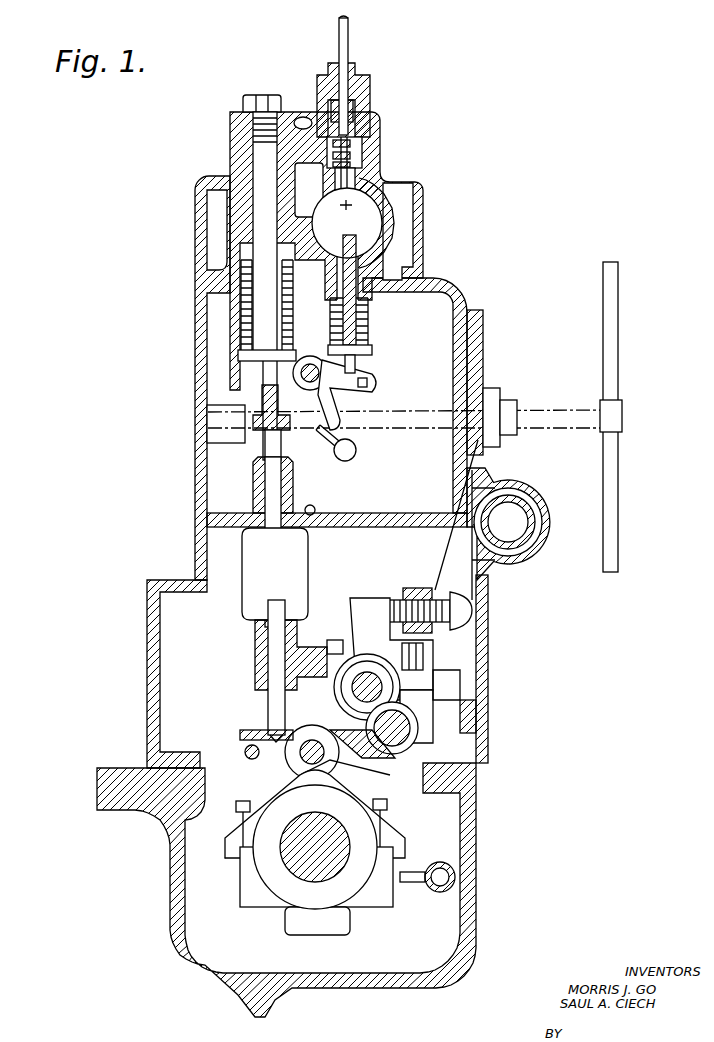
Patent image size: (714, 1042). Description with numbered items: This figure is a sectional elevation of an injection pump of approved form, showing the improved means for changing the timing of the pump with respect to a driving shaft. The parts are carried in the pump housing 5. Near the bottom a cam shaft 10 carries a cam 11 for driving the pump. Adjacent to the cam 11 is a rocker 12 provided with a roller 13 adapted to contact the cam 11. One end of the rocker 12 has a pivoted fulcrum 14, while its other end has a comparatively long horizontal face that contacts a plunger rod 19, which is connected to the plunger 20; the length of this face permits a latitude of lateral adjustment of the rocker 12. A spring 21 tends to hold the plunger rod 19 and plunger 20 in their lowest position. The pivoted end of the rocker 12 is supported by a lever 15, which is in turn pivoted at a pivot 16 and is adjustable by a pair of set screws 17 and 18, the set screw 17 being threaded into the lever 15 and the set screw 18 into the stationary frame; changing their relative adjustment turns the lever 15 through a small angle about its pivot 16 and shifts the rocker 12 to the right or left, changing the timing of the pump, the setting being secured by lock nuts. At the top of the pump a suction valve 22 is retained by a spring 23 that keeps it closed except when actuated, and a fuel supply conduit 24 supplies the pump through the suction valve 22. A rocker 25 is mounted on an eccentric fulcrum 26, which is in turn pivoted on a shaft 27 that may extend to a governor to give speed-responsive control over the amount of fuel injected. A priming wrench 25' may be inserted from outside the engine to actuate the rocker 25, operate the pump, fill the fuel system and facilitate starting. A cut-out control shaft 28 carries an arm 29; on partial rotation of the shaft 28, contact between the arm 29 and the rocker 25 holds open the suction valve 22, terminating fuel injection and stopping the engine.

The pump housing 5 is at (197, 492).
The cam shaft 10 is at (300, 865).
The cam 11 is at (342, 802).
The rocker 12 is at (340, 754).
The roller 13 is at (296, 760).
The pivoted fulcrum 14 is at (402, 735).
The lever 15 is at (405, 706).
The pivot 16 is at (383, 688).
The set screw 17 is at (428, 655).
The set screw 18 is at (470, 608).
The plunger rod 19 is at (270, 690).
The plunger 20 is at (256, 318).
The spring 21 is at (248, 358).
The suction valve 22 is at (362, 158).
The spring 23 is at (358, 137).
The fuel supply conduit 24 is at (366, 224).
The rocker 25 is at (406, 506).
The priming wrench 25' is at (579, 417).
The eccentric fulcrum 26 is at (311, 357).
The shaft 27 is at (318, 376).
The cut-out control shaft 28 is at (354, 454).
The arm 29 is at (325, 441).